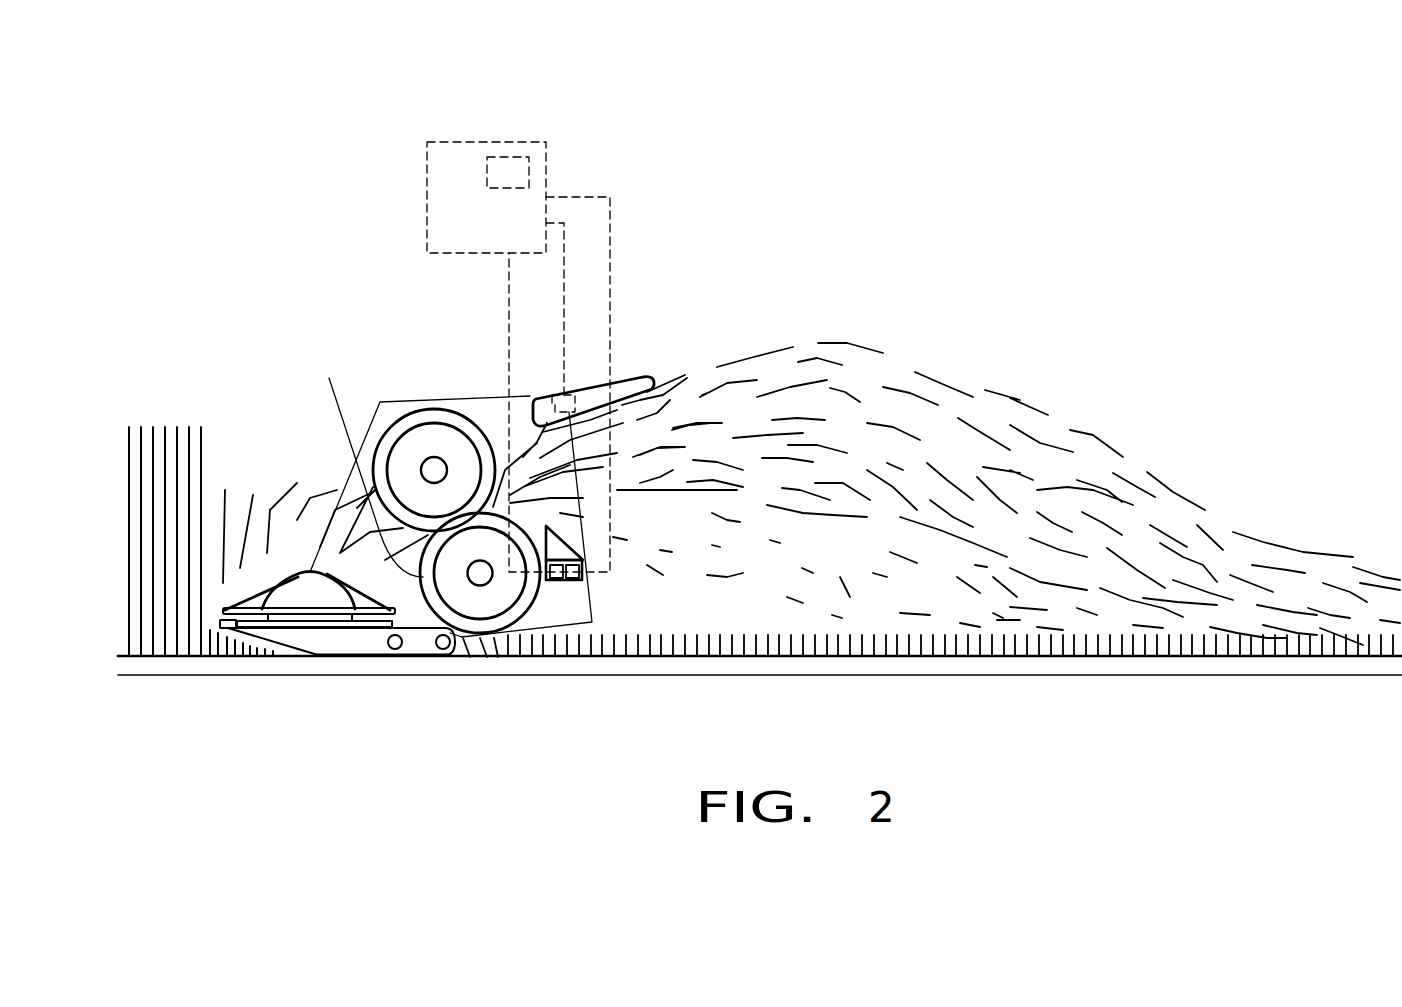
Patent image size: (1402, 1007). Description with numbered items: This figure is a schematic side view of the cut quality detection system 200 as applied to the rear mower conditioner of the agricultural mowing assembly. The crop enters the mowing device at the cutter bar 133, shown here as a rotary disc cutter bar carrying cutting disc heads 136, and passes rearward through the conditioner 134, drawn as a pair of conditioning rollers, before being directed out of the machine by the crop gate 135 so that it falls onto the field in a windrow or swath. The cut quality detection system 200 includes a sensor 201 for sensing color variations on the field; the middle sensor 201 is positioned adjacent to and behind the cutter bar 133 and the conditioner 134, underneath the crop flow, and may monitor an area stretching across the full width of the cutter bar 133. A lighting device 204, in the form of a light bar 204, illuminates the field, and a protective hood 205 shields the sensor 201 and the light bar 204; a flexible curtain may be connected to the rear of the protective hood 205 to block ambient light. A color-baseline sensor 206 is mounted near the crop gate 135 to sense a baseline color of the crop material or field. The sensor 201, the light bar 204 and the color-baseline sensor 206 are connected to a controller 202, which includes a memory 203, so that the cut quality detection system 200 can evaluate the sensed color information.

The cut quality detection system 200 is at (355, 191).
The sensor 201 is at (553, 583).
The controller 202 is at (458, 142).
The memory 203 is at (511, 157).
The lighting device 204 is at (577, 583).
The protective hood 205 is at (565, 540).
The color-baseline sensor 206 is at (548, 400).
The cutter bar 133 is at (300, 545).
The conditioner 134 is at (387, 435).
The crop gate 135 is at (643, 378).
The cutting disc head 136 is at (257, 593).